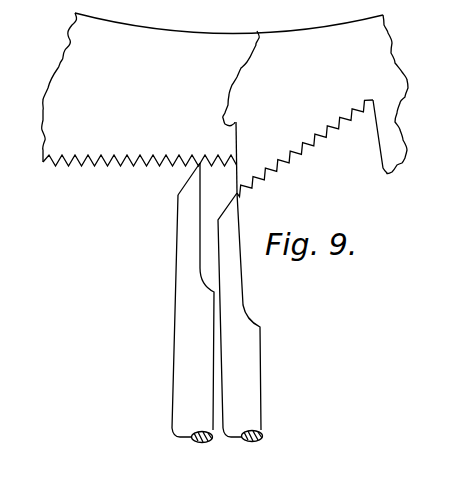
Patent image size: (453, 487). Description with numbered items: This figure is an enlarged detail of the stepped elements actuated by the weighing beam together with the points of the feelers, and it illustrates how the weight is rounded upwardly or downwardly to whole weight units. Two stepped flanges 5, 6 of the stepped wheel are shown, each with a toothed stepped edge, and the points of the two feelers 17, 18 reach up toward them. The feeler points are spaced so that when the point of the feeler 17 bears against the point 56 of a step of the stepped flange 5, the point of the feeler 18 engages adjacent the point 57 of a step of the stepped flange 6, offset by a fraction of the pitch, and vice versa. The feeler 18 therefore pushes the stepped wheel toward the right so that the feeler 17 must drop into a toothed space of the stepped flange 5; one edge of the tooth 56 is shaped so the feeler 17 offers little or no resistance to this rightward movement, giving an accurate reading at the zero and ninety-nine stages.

The stepped flange 5 is at (72, 60).
The stepped flange 6 is at (337, 107).
The point of a step (tooth) 56 is at (196, 163).
The point of a step 57 is at (236, 122).
The feeler 17 is at (175, 326).
The feeler 18 is at (250, 355).